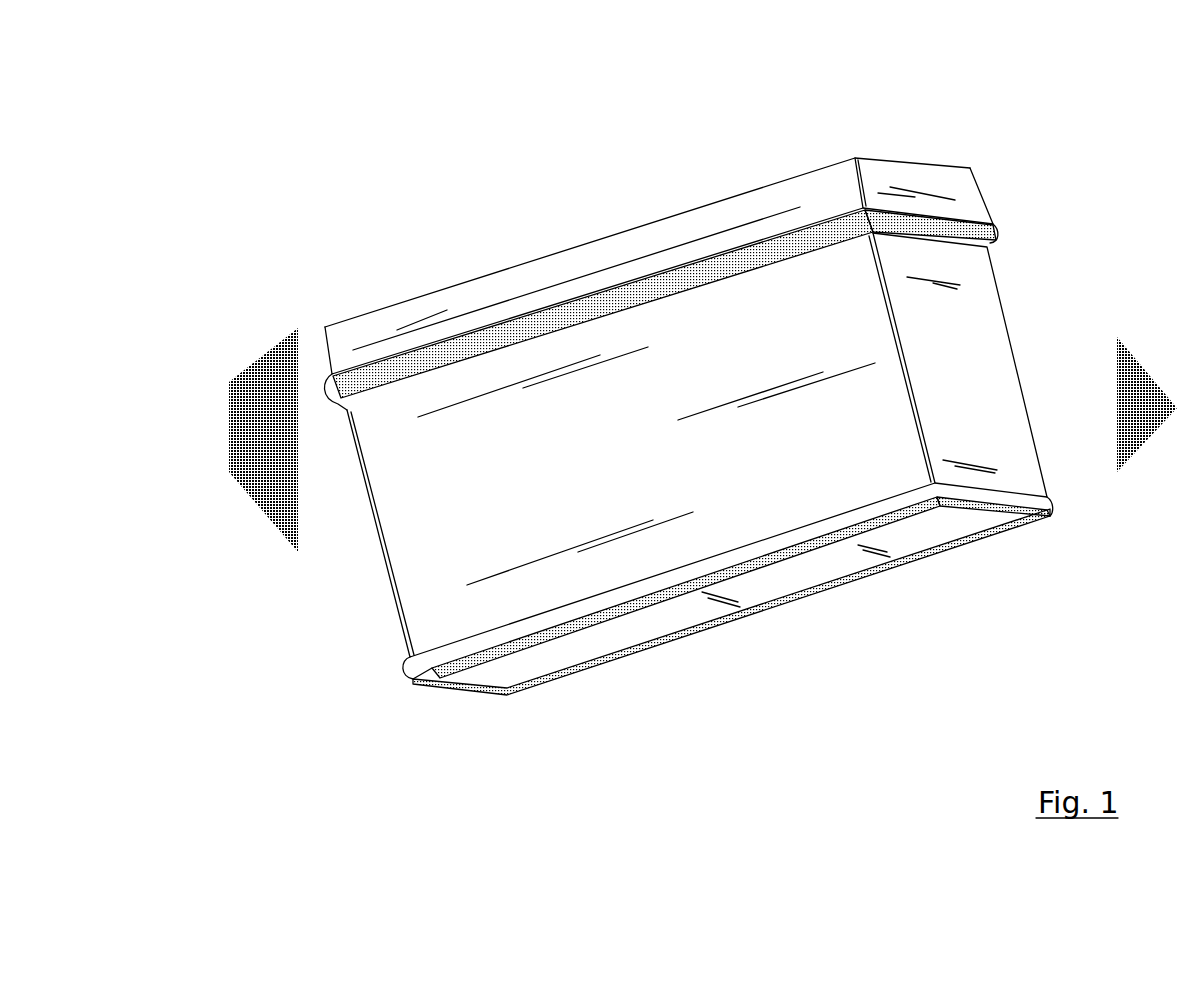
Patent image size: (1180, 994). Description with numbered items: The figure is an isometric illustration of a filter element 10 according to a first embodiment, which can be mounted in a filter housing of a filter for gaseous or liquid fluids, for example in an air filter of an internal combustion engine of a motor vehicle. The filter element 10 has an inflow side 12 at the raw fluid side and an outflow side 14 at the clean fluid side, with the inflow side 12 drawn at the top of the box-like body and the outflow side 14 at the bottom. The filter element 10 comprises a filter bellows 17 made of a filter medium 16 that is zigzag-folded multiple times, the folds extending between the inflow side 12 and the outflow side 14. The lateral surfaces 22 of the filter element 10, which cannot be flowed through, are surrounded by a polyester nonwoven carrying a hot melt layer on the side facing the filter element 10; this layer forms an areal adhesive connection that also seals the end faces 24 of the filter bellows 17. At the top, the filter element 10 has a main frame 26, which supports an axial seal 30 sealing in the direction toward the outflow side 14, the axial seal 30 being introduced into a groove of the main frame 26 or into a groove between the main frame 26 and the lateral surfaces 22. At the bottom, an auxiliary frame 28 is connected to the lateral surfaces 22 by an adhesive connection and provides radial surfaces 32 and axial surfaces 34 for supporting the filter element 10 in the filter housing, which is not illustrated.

The filter element 10 is at (219, 135).
The inflow side 12 is at (575, 217).
The outflow side 14 is at (798, 588).
The filter medium 16 is at (921, 552).
The filter bellows 17 is at (654, 625).
The lateral surfaces 22 is at (390, 488).
The end faces 24 is at (995, 400).
The main frame 26 is at (757, 203).
The auxiliary frame 28 is at (407, 665).
The axial seal 30 is at (997, 240).
The radial surfaces 32 is at (1035, 501).
The axial surfaces 34 is at (992, 536).